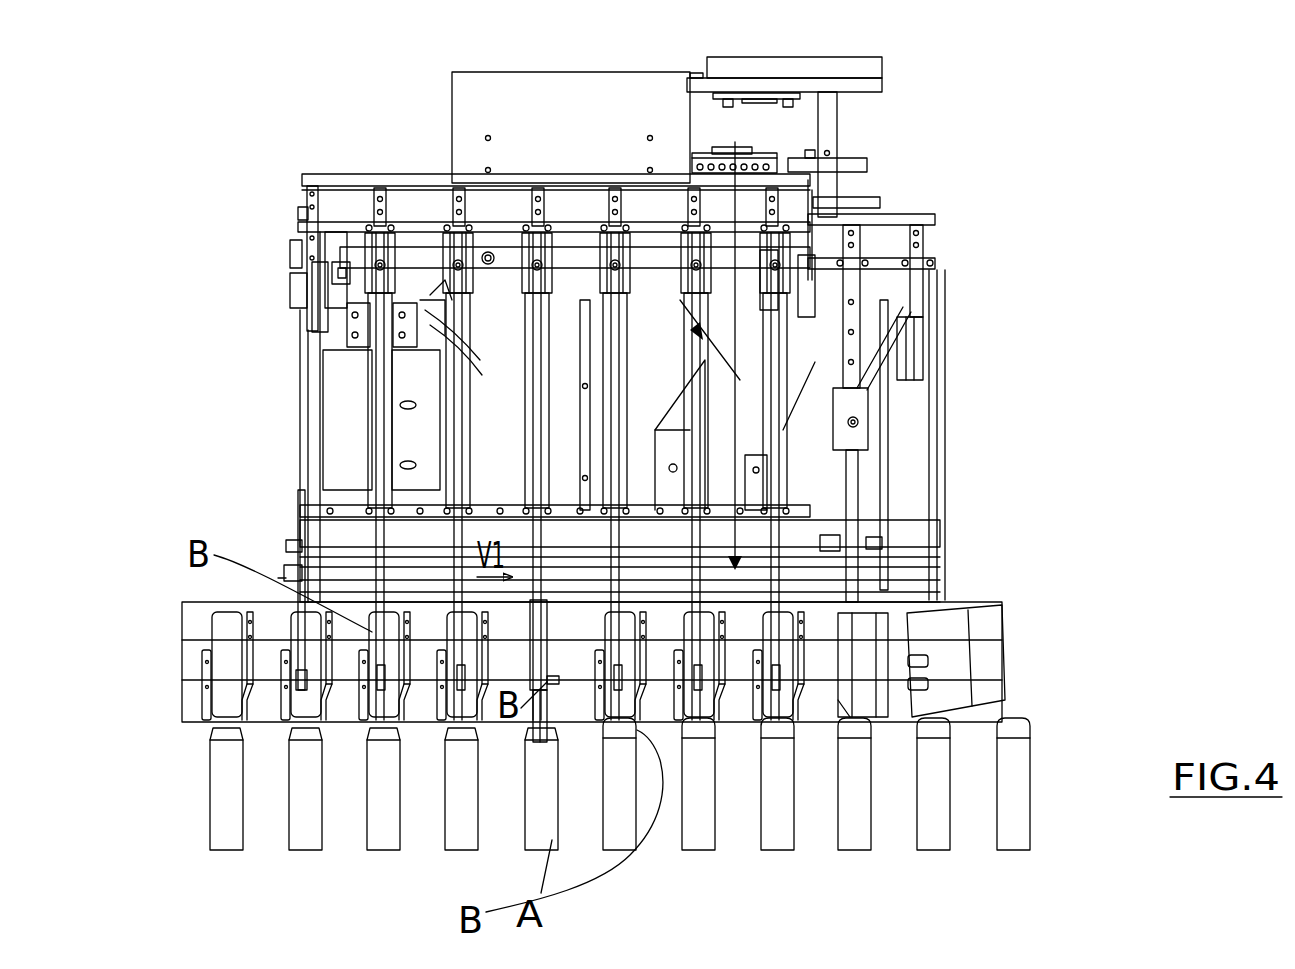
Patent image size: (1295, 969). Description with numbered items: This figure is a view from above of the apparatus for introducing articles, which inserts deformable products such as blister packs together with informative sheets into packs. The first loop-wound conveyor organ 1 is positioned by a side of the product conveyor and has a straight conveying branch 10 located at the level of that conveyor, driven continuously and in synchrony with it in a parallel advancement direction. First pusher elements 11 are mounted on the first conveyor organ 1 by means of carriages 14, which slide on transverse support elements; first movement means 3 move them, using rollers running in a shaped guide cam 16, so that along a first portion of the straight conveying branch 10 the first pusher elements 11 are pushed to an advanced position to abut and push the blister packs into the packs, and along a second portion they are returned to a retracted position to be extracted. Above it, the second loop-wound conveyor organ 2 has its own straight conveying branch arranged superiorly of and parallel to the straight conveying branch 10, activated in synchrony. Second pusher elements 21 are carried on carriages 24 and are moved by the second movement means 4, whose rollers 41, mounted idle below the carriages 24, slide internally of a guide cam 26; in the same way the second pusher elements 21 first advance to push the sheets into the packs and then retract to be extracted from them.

The first loop-wound conveyor organ 1 is at (965, 520).
The second loop-wound conveyor organ 2 is at (293, 178).
The first movement means 3 is at (788, 415).
The second movement means 4 is at (440, 300).
The straight conveying branch 10 is at (870, 572).
The first pusher elements 11 is at (465, 612).
The carriages 14 is at (866, 440).
The guide cam 16 is at (875, 343).
The second pusher elements 21 is at (452, 715).
The carriages 24 is at (322, 292).
The guide cam 26 is at (437, 300).
The rollers 41 is at (336, 276).